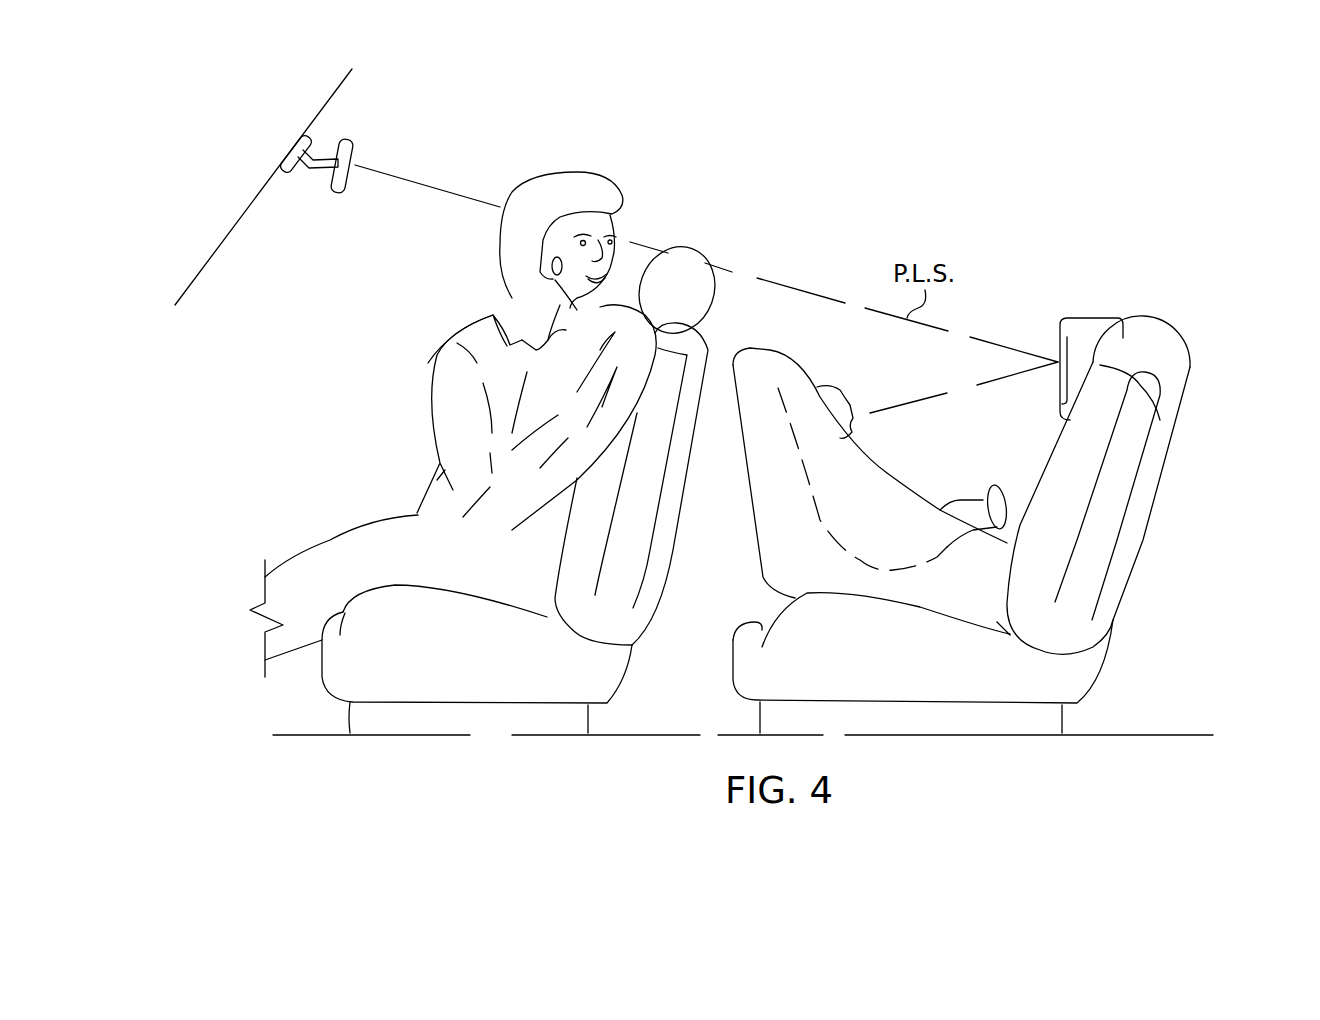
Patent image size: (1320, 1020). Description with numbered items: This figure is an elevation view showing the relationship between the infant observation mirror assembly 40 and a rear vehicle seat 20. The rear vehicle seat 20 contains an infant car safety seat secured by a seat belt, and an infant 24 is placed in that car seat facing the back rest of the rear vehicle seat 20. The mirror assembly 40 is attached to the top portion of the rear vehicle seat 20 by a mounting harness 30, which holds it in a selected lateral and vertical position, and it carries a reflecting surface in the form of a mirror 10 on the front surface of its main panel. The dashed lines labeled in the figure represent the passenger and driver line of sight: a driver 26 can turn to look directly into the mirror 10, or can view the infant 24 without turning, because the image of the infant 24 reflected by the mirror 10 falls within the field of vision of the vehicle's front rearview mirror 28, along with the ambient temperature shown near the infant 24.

The mirror 10 is at (1059, 345).
The rear vehicle seat 20 is at (979, 508).
The infant 24 is at (827, 387).
The driver 26 is at (500, 230).
The front rearview mirror 28 is at (357, 157).
The mounting harness 30 is at (1160, 333).
The mirror assembly 40 is at (1160, 422).